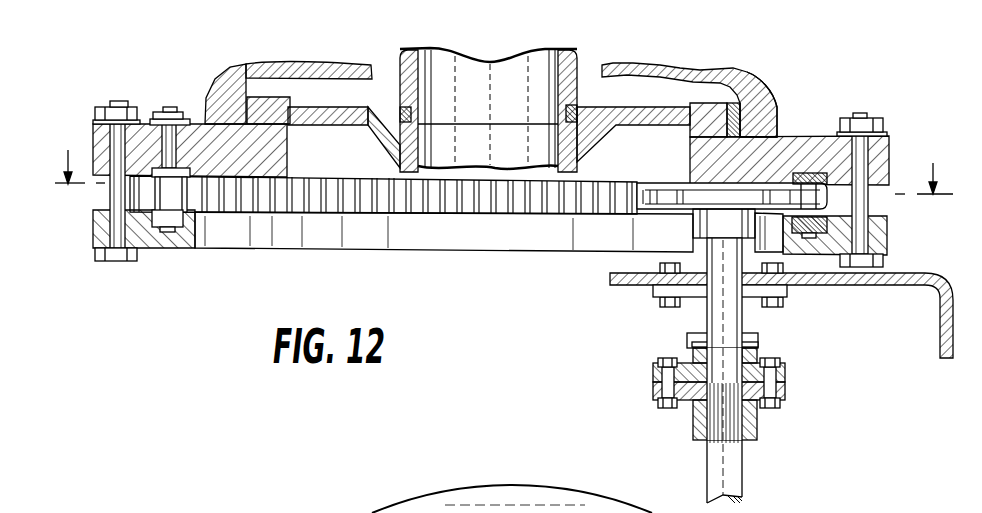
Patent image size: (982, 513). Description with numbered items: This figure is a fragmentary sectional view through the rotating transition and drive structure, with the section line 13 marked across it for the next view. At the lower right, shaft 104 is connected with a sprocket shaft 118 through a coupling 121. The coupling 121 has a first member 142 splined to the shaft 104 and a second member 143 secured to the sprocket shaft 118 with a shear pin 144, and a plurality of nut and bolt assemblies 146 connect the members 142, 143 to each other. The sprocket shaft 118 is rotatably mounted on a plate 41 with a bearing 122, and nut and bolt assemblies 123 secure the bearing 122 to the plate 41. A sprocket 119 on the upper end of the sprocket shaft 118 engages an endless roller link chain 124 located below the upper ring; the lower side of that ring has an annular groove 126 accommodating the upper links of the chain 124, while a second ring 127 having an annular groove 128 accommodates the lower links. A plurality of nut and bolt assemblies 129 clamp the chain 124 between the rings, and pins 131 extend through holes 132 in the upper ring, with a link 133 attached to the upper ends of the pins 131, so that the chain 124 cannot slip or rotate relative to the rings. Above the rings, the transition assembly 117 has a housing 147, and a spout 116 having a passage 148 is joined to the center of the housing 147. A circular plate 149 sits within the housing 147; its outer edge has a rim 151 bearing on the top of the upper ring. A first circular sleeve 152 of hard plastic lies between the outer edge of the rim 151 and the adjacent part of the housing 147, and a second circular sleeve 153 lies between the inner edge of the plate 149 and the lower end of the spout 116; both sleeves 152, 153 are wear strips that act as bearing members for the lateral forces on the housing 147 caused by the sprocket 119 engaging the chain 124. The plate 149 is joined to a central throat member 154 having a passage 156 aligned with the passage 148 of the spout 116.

The section line 13- 13 is at (504, 161).
The plate 41 is at (924, 276).
The shaft 104 is at (734, 478).
The spout 116 is at (566, 52).
The transition assembly 117 is at (734, 58).
The sprocket shaft 118 is at (713, 322).
The sprocket 119 is at (672, 197).
The coupling 121 is at (719, 404).
The bearing 122 is at (740, 294).
The nut and bolt assemblies 123 is at (660, 302).
The endless roller link chain 124 is at (520, 205).
The annular groove 126 is at (185, 166).
The second ring 127 is at (308, 234).
The annular groove 128 is at (157, 249).
The nut and bolt assembly 129 is at (113, 224).
The pins 131 is at (189, 124).
The holes 132 is at (158, 145).
The link 133 is at (160, 150).
The first member 142 is at (696, 425).
The second member 143 is at (784, 379).
The shear pin 144 is at (760, 346).
The nut and bolt assemblies 146 is at (668, 364).
The housing 147 is at (230, 82).
The passage 148 is at (491, 110).
The circular plate 149 is at (327, 107).
The rim 151 is at (277, 107).
The first circular sleeve 152 is at (752, 93).
The second circular sleeve 153 is at (580, 110).
The central throat member 154 is at (410, 153).
The passage 156 is at (494, 145).